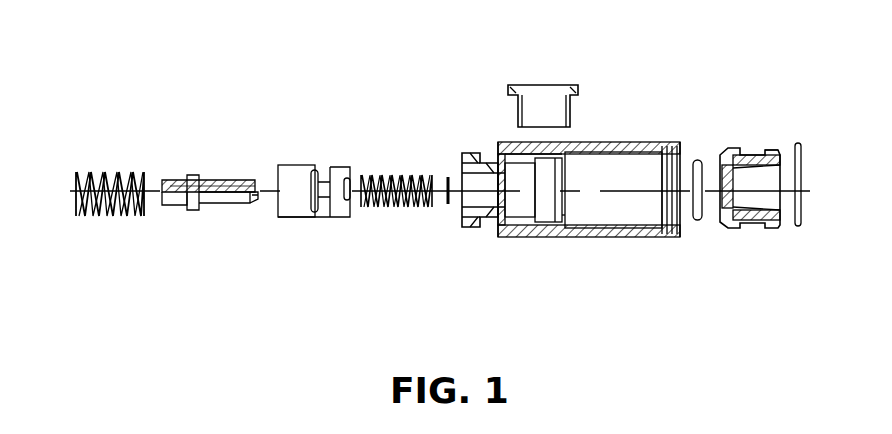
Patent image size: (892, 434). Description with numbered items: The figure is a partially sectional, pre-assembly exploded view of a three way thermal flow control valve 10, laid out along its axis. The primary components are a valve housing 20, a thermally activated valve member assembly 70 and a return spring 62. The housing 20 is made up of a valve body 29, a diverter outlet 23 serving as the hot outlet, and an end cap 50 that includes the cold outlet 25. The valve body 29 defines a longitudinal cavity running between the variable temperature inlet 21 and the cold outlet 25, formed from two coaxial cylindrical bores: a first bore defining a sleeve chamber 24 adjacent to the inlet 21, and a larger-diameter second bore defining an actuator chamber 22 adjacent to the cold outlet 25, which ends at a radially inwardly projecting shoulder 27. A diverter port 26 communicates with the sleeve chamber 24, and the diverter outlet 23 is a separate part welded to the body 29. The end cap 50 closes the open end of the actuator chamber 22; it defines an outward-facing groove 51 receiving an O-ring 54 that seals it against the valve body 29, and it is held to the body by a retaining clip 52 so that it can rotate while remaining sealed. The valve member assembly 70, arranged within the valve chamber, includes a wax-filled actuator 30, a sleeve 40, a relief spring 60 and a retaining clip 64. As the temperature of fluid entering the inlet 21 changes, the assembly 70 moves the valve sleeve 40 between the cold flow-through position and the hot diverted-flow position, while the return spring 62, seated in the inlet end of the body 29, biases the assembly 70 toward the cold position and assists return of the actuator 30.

The thermal flow control valve 10 is at (75, 53).
The valve housing 20 is at (574, 108).
The variable temperature inlet 21 is at (468, 229).
The actuator chamber 22 is at (617, 158).
The diverter outlet 23 is at (576, 98).
The sleeve chamber 24 is at (520, 218).
The cold outlet 25 is at (772, 148).
The diverter port 26 is at (540, 163).
The shoulder 27 is at (566, 218).
The valve body 29 is at (588, 238).
The actuator 30 is at (192, 211).
The valve sleeve 40 is at (318, 218).
The end cap 50 is at (752, 224).
The outward-facing groove 51 is at (727, 226).
The retaining clip 52 is at (798, 227).
The O-ring 54 is at (697, 222).
The relief spring 60 is at (372, 209).
The return spring 62 is at (115, 216).
The retaining clip 64 is at (445, 205).
The valve member assembly 70 is at (155, 297).